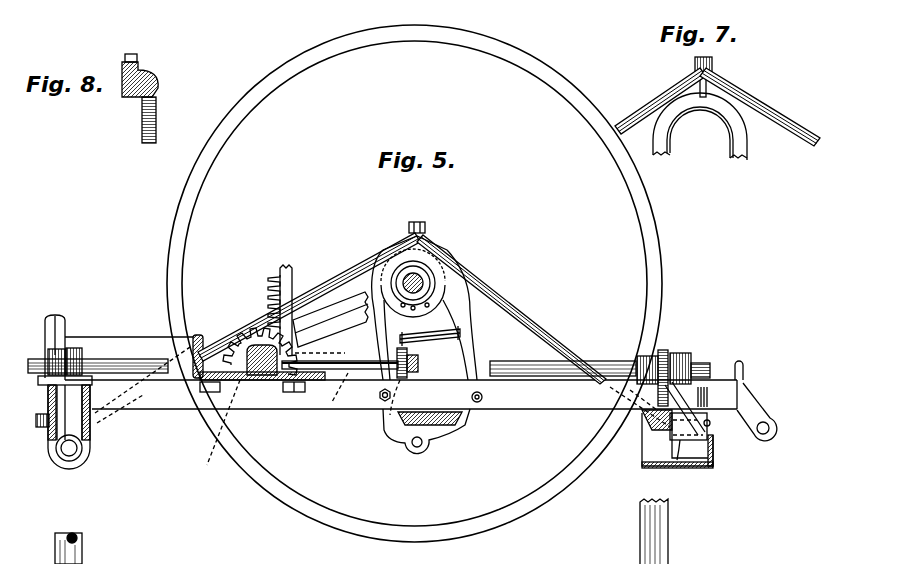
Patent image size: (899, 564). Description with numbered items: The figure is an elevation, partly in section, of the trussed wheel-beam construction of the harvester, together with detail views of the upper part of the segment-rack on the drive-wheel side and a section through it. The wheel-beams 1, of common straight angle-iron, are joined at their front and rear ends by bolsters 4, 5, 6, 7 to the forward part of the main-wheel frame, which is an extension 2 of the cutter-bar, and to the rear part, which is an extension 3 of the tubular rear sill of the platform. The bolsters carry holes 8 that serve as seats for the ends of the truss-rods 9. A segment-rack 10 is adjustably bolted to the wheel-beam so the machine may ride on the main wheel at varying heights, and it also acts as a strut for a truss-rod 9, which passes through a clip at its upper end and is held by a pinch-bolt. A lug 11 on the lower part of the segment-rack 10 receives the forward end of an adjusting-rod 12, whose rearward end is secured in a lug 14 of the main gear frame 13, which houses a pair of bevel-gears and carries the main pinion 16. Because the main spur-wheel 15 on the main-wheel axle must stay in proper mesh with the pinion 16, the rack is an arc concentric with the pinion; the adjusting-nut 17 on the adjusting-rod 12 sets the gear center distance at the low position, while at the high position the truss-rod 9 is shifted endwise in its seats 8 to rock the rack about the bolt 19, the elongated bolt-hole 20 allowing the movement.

In FIG. 5, the wheel-beam 1 is at (421, 389).
In FIG. 5, the extension of the cutter-bar 2 is at (633, 482).
In FIG. 5, the extension of the tubular rear sill 3 is at (56, 468).
In FIG. 5, the bolster 4 is at (37, 390).
In FIG. 5, the bolster 5 is at (673, 402).
In FIG. 5, the bolster 6 is at (361, 531).
In FIG. 7, the bolster 7 is at (703, 106).
In FIG. 5, the hole 8 is at (41, 432).
In FIG. 5, the truss-rod 9 is at (323, 283).
In FIG. 7, the truss-rod 9 is at (773, 126).
In FIG. 8, the truss-rod 9 is at (155, 76).
In FIG. 5, the segment-rack 10 is at (404, 319).
In FIG. 7, the segment-rack 10 is at (733, 115).
In FIG. 8, the segment-rack 10 is at (145, 108).
In FIG. 5, the lug 11 is at (386, 426).
In FIG. 5, the adjusting-rod 12 is at (332, 403).
In FIG. 5, the main gear frame 13 is at (298, 425).
In FIG. 5, the lug 14 is at (459, 359).
In FIG. 5, the main spur-wheel 15 is at (339, 309).
In FIG. 5, the main pinion 16 is at (265, 333).
In FIG. 5, the adjusting-nut 17 is at (424, 363).
In FIG. 5, the bolt 19 is at (378, 396).
In FIG. 5, the bolt-hole 20 is at (470, 397).